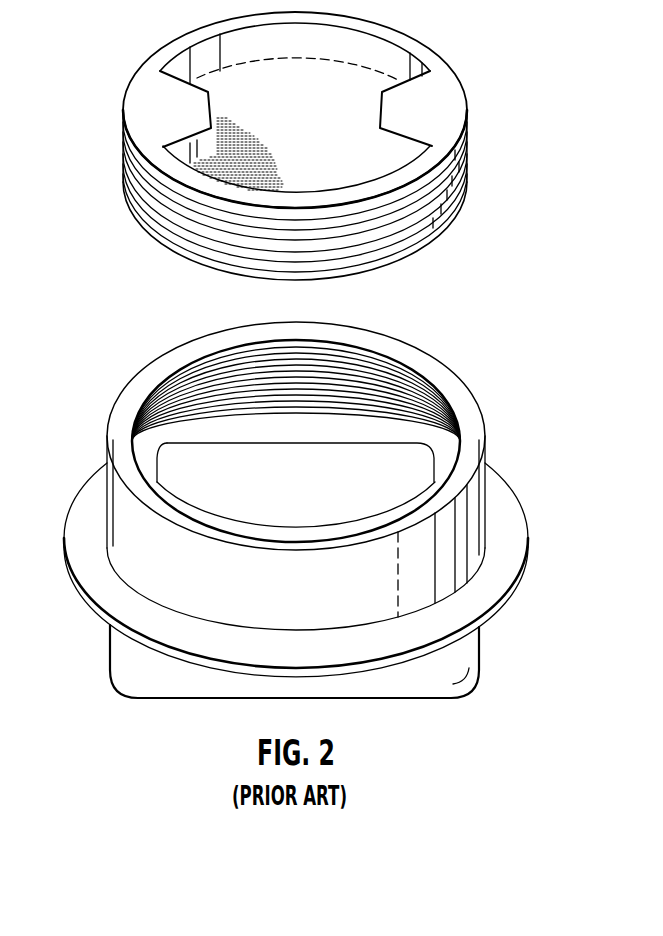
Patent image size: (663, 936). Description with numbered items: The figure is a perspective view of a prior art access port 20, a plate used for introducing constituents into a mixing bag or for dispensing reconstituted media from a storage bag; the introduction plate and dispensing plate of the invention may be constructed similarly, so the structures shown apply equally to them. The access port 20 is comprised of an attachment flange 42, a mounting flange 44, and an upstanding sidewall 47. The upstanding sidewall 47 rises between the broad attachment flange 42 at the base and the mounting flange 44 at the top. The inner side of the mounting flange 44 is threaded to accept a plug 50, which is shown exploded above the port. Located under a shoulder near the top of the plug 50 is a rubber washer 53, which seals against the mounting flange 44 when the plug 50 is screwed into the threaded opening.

The access port 20 is at (474, 345).
The attachment flange 42 is at (507, 490).
The mounting flange 44 is at (157, 363).
The upstanding sidewall 47 is at (120, 512).
The plug 50 is at (472, 70).
The rubber washer 53 is at (128, 130).